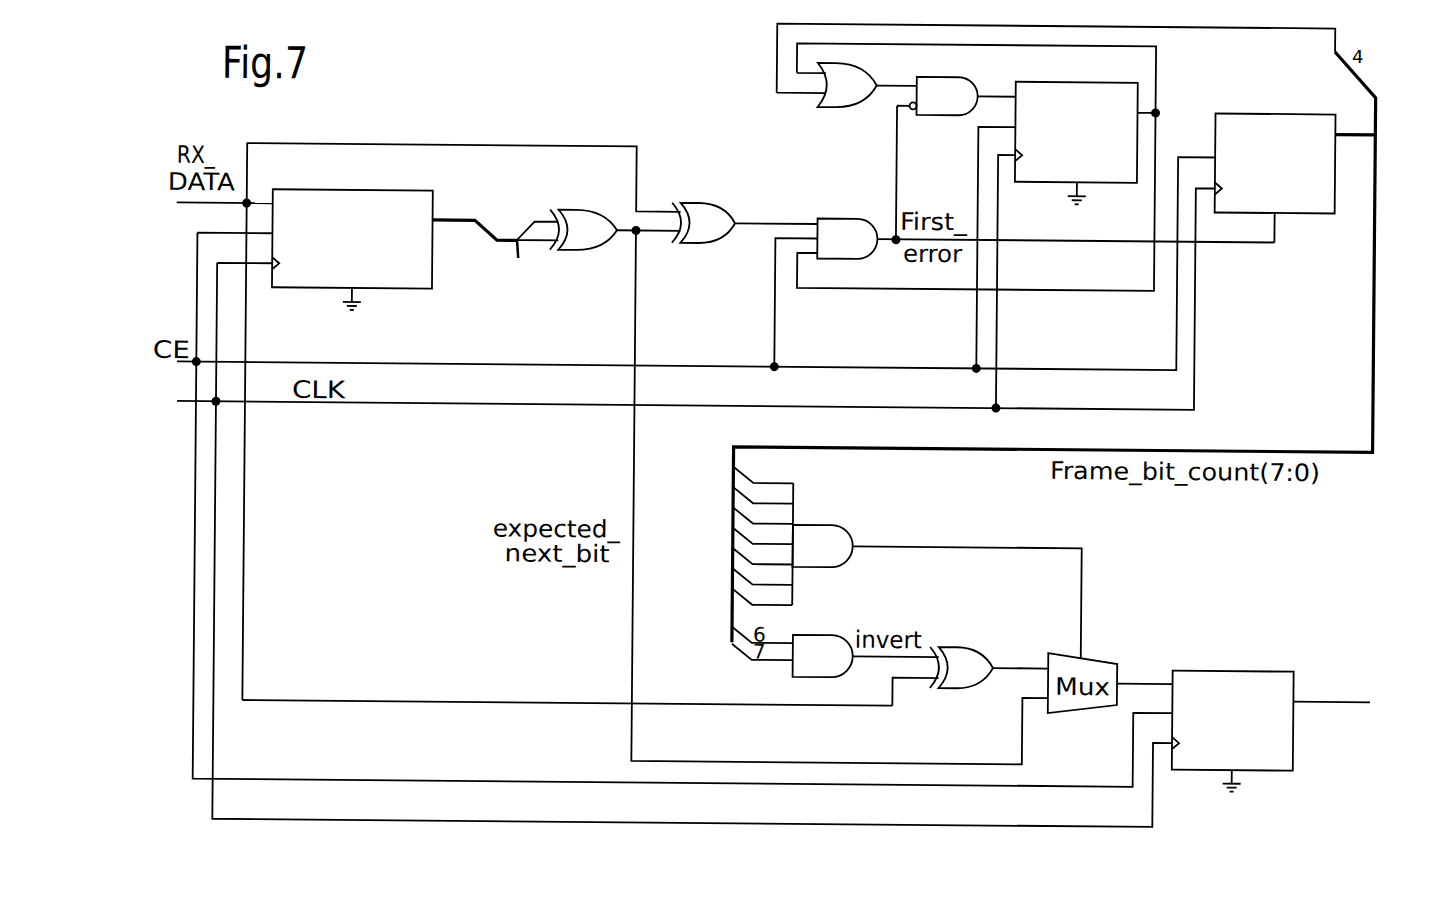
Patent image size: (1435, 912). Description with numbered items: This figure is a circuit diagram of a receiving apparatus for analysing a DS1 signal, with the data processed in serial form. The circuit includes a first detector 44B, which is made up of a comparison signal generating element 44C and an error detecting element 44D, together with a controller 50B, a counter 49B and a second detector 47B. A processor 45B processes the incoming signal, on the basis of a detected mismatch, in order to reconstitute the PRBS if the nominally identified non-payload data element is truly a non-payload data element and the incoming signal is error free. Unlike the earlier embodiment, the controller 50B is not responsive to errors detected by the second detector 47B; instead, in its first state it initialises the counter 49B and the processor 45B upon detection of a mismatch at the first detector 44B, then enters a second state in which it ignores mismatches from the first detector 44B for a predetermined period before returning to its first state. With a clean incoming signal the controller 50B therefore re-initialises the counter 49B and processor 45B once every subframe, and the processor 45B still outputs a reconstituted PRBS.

The first detector 44B is at (590, 121).
The comparison signal generating element 44C is at (485, 175).
The error detecting element 44D is at (696, 167).
The processor 45B is at (861, 521).
The second detector 47B is at (1170, 619).
The counter 49B is at (1297, 235).
The controller 50B is at (1244, 67).